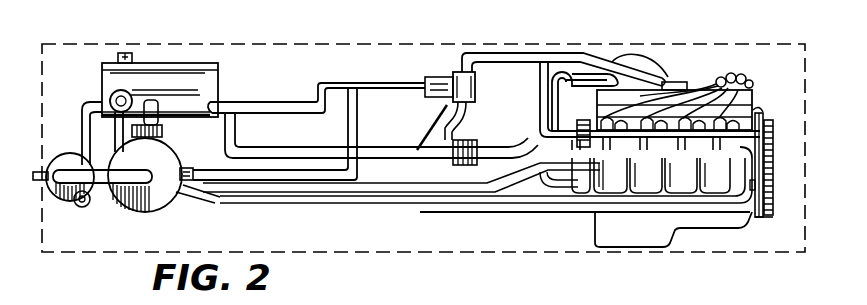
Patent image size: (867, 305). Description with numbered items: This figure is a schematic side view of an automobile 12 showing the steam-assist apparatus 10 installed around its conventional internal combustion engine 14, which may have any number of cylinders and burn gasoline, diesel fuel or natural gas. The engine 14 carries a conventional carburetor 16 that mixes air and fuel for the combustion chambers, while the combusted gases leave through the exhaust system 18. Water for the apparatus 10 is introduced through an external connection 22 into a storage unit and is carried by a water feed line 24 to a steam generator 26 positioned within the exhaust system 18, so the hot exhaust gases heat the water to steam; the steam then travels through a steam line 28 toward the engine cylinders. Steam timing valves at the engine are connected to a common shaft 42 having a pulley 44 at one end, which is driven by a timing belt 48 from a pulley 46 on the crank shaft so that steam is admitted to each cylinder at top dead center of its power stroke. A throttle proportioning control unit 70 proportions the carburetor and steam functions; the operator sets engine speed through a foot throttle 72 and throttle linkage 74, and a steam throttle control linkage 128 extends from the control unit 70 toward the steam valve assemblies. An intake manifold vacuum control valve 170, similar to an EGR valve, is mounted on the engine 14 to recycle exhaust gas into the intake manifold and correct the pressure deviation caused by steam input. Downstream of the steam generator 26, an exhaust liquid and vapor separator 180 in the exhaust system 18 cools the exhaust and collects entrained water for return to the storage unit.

The apparatus 10 is at (357, 72).
The automobile 12 is at (203, 44).
The internal combustion engine 14 is at (713, 221).
The carburetor 16 is at (678, 82).
The exhaust system 18 is at (265, 194).
The external connection 22 is at (127, 53).
The water feed line 24 is at (113, 131).
The steam generator 26 is at (162, 202).
The steam line 28 is at (373, 124).
The common shaft 42 is at (753, 118).
The pulley 44 is at (769, 146).
The crank shaft pulley 46 is at (773, 198).
The timing belt 48 is at (766, 218).
The throttle proportioning control unit 70 is at (445, 74).
The foot throttle 72 is at (435, 115).
The throttle linkage 74 is at (456, 114).
The steam throttle control linkage 128 is at (505, 53).
The intake manifold vacuum control valve 170 is at (547, 88).
The exhaust liquid and vapor separator 180 is at (57, 198).